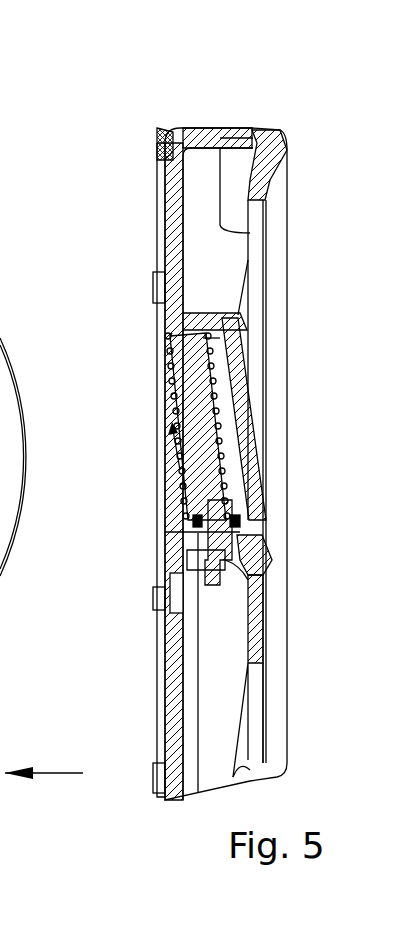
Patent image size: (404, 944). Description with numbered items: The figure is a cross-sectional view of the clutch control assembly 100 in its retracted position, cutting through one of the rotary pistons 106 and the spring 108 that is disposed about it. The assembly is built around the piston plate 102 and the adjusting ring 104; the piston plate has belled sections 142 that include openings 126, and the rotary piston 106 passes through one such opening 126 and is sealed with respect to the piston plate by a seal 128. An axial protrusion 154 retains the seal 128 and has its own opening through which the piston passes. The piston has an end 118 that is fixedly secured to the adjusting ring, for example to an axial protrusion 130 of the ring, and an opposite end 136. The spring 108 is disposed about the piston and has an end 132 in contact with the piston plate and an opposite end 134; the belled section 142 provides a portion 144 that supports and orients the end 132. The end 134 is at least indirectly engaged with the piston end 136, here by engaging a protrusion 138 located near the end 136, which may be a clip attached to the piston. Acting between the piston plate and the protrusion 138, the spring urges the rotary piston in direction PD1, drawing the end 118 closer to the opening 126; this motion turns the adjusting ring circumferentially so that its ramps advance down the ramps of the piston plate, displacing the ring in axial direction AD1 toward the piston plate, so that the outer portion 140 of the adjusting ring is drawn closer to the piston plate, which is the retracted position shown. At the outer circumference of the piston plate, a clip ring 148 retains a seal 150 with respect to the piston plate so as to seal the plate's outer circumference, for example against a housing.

The clutch control assembly 100 is at (312, 108).
The piston plate 102 is at (196, 116).
The adjusting ring 104 is at (281, 115).
The pistons 106 is at (173, 392).
The springs 108 is at (163, 363).
The ends of pistons 118 is at (265, 593).
The openings 126 is at (178, 497).
The seals 128 is at (242, 513).
The axial protrusions 130 is at (188, 553).
The ends of springs 132 is at (193, 521).
The opposite ends of springs 134 is at (205, 340).
The ends of pistons 136 is at (178, 328).
The protrusions 138 is at (212, 316).
The outer portion of adjustment ring 140 is at (287, 138).
The belled sections 142 is at (255, 420).
The portions 144 is at (242, 547).
The clip ring 148 is at (165, 212).
The seal 150 is at (167, 127).
The axial protrusions 154 is at (190, 522).
The direction PD1 is at (177, 473).
The axial direction AD1 is at (42, 773).